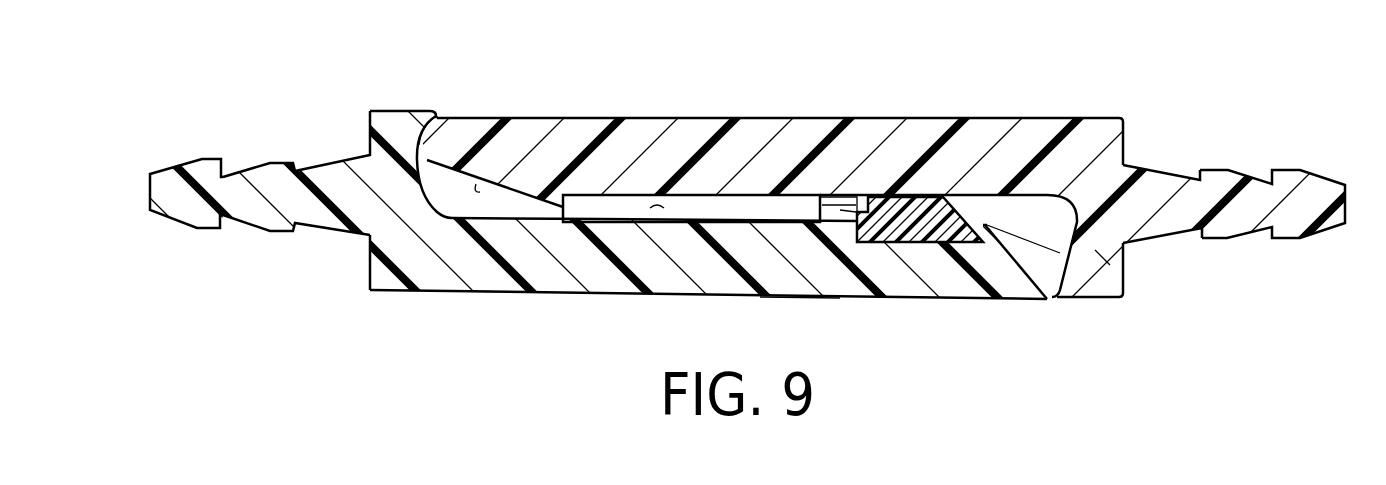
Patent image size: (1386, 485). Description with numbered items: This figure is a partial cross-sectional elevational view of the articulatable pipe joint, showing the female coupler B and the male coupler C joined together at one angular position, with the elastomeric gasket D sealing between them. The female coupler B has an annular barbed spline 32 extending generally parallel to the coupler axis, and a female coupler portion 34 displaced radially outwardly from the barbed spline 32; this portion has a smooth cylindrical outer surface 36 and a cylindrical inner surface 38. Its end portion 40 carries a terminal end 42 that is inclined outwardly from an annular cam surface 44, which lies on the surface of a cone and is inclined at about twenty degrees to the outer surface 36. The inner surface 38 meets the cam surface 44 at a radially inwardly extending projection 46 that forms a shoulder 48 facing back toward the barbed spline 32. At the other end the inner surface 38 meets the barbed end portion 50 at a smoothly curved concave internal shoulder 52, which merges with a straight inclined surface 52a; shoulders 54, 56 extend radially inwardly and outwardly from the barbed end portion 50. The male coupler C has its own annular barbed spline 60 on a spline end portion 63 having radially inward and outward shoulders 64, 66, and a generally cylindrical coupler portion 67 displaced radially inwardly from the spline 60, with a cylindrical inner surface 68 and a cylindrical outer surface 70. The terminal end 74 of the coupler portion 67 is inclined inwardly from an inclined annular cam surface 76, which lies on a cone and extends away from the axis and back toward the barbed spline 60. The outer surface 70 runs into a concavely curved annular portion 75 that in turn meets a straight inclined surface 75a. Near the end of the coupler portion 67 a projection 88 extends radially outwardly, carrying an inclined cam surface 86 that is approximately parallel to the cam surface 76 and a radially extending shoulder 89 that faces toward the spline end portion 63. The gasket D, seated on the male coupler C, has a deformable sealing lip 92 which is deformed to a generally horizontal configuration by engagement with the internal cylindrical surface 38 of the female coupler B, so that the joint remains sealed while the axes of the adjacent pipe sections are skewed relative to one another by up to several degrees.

The annular barbed spline 32 is at (1290, 183).
The female coupler portion 34 is at (703, 130).
The smooth cylindrical outer surface 36 is at (560, 120).
The cylindrical inner surface 38 is at (620, 198).
The end portion 40 is at (458, 132).
The terminal end 42 is at (420, 150).
The annular cam surface 44 is at (480, 190).
The radially inwardly extending projection 46 is at (560, 205).
The shoulder 48 is at (583, 225).
The barbed end portion 50 is at (1105, 125).
The concave internal shoulder 52 is at (412, 140).
The straight surface 52a is at (450, 120).
The shoulder 54 is at (1124, 262).
The shoulder 56 is at (1127, 135).
The annular barbed spline 60 is at (185, 215).
The spline end portion 63 is at (337, 178).
The shoulder 64 is at (370, 272).
The shoulder 66 is at (347, 135).
The coupler portion 67 is at (801, 290).
The cylindrical inner surface 68 is at (483, 292).
The cylindrical outer surface 70 is at (655, 212).
The terminal end 74 is at (1058, 298).
The concavely curved annular portion 75 is at (1123, 165).
The straight surface 75a is at (1105, 258).
The inclined annular cam surface 76 is at (1021, 224).
The inclined cam surface 86 is at (848, 205).
The projection 88 is at (828, 200).
The shoulder 89 is at (815, 205).
The deformable lip portion 92 is at (890, 200).
The female coupler B is at (768, 116).
The male coupler C is at (510, 298).
The annular gasket D is at (917, 246).